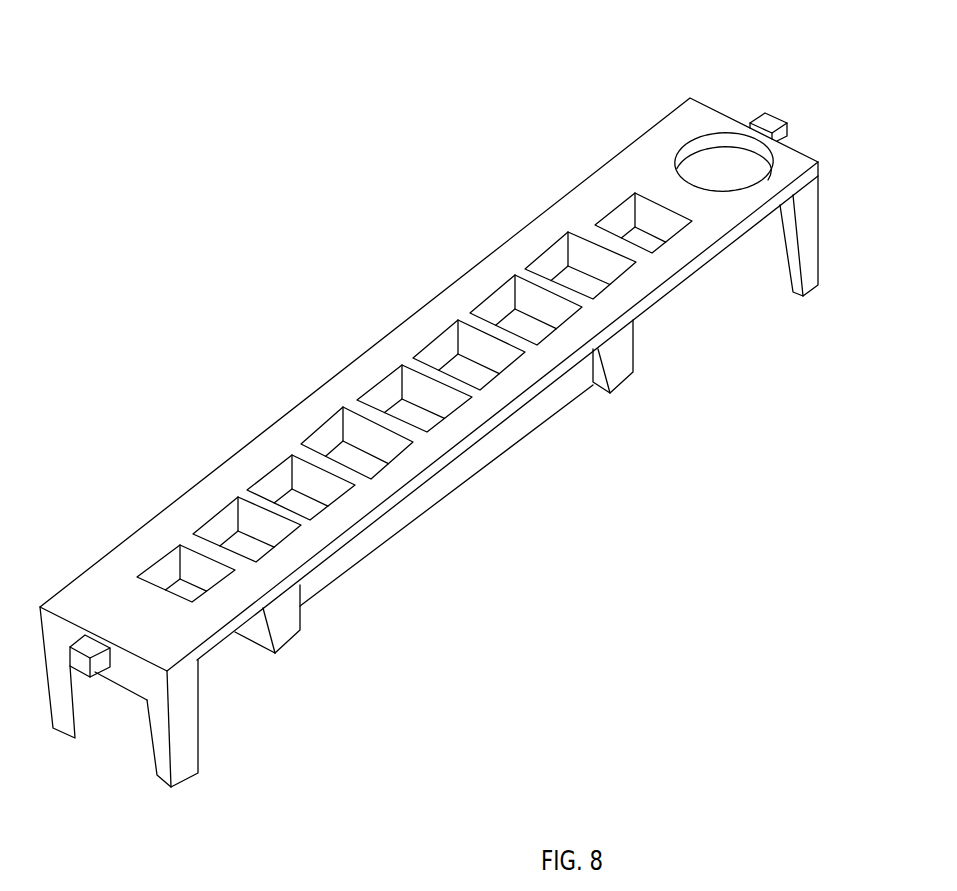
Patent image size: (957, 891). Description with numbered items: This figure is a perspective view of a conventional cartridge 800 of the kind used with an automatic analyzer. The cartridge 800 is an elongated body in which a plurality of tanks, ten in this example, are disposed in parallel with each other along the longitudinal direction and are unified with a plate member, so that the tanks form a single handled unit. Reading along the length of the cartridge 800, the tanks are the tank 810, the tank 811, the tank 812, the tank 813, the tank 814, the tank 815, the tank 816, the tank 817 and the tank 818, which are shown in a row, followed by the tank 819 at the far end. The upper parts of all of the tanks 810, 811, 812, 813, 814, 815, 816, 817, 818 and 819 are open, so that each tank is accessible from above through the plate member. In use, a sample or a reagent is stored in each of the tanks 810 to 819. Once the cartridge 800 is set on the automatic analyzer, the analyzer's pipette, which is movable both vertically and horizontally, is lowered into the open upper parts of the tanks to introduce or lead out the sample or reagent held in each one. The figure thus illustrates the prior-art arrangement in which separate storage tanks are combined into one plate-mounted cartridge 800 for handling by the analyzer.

The cartridge 800 is at (218, 78).
The tank 810 is at (168, 581).
The tank 811 is at (226, 533).
The tank 812 is at (280, 491).
The tank 813 is at (331, 443).
The tank 814 is at (390, 401).
The tank 815 is at (446, 356).
The tank 816 is at (503, 311).
The tank 817 is at (556, 268).
The tank 818 is at (623, 229).
The tank 819 is at (705, 162).